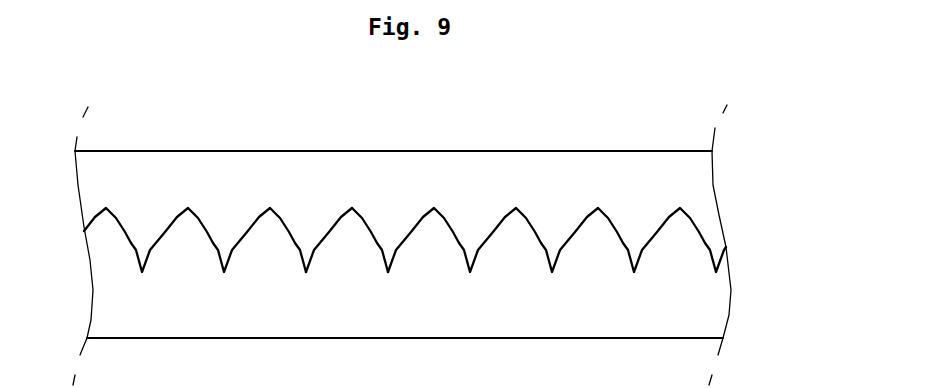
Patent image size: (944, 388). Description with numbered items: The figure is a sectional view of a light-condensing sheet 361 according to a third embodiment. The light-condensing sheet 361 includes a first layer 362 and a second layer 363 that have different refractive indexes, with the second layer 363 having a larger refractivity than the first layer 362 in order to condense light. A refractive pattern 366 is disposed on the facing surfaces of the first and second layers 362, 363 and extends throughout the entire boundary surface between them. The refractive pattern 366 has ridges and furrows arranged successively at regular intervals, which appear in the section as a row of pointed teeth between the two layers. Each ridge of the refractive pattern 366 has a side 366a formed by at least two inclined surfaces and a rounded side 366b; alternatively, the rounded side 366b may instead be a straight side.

The light-condensing sheet 361 is at (817, 182).
The first layer 362 is at (707, 293).
The second layer 363 is at (707, 185).
The refractive pattern 366 is at (407, 312).
The side with inclined surfaces 366a is at (375, 247).
The rounded side 366b is at (320, 248).